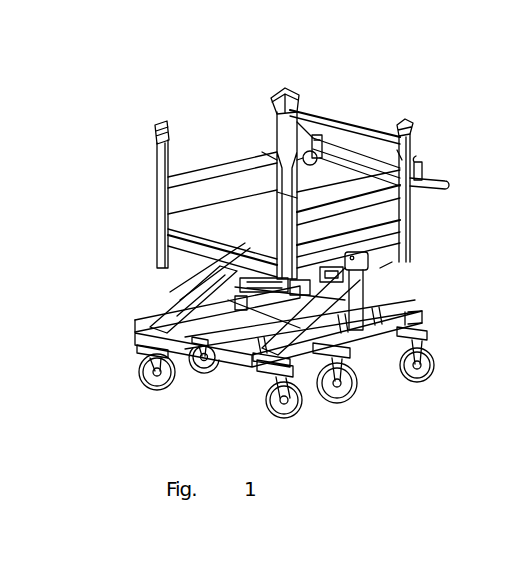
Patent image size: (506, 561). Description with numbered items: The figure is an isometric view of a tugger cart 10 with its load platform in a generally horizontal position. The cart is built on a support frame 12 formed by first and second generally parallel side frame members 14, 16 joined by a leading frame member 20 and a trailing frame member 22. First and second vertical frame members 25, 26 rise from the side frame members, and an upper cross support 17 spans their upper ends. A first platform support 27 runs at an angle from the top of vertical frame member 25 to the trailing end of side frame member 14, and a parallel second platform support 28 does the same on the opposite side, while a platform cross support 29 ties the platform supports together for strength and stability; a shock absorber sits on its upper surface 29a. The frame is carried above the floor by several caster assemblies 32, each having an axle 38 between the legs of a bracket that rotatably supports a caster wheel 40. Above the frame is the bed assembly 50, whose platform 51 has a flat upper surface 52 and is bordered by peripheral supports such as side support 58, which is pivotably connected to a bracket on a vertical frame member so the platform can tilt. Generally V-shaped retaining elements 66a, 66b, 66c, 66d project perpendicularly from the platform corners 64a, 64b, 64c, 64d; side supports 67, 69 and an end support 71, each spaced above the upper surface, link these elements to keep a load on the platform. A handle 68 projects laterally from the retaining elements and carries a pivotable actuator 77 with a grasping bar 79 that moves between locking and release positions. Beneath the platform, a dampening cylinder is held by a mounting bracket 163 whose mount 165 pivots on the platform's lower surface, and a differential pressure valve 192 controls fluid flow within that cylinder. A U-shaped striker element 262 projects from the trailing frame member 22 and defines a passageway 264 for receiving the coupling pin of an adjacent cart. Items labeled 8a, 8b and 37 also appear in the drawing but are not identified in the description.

The tugger cart 10 is at (357, 435).
The support frame 12 is at (134, 321).
The first side frame member 14 is at (180, 318).
The second side frame member 16 is at (410, 313).
The upper cross support 17 is at (310, 272).
The leading frame member 20 is at (381, 312).
The trailing frame member 22 is at (235, 352).
The first vertical frame member 25 is at (170, 300).
The second vertical frame member 26 is at (383, 268).
The first platform support 27 is at (175, 312).
The second platform support 28 is at (420, 402).
The platform cross support 29 is at (332, 298).
The upper surface of platform cross support 29a is at (275, 290).
The caster assembly 32 is at (142, 380).
The pivot 37 is at (500, 273).
The axle 38 is at (333, 165).
The caster wheel 40 is at (140, 364).
The bed assembly 50 is at (174, 230).
The platform 51 is at (209, 200).
The upper surface 52 is at (263, 237).
The side support 58 is at (409, 244).
The corner of platform 64a is at (160, 234).
The corner of platform 64b is at (276, 196).
The corner of platform 64c is at (283, 267).
The corner of platform 64d is at (413, 237).
The retaining element 66a is at (155, 124).
The retaining element 66b is at (286, 92).
The retaining element 66c is at (272, 152).
The retaining element 66d is at (405, 123).
The side support 67 is at (193, 200).
The handle 68 is at (443, 180).
The side support 69 is at (378, 203).
The end support 71 is at (304, 118).
The actuator 77 is at (422, 167).
The grasping bar 79 is at (342, 133).
The bracket 8a is at (335, 138).
The bracket 8b is at (399, 135).
The mounting bracket 163 is at (230, 265).
The mount 165 is at (222, 183).
The differential pressure valve 192 is at (300, 403).
The U-shaped striker element 262 is at (215, 298).
The passageway 264 is at (210, 280).